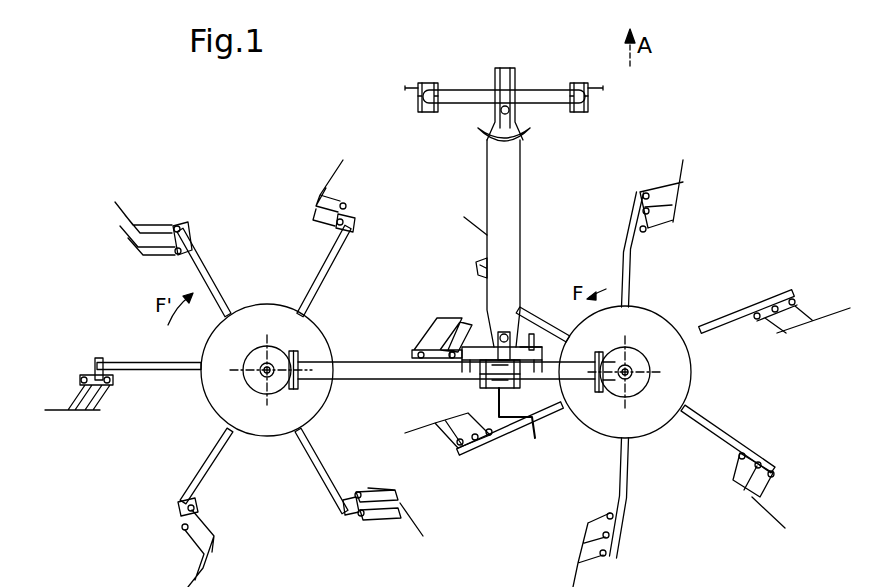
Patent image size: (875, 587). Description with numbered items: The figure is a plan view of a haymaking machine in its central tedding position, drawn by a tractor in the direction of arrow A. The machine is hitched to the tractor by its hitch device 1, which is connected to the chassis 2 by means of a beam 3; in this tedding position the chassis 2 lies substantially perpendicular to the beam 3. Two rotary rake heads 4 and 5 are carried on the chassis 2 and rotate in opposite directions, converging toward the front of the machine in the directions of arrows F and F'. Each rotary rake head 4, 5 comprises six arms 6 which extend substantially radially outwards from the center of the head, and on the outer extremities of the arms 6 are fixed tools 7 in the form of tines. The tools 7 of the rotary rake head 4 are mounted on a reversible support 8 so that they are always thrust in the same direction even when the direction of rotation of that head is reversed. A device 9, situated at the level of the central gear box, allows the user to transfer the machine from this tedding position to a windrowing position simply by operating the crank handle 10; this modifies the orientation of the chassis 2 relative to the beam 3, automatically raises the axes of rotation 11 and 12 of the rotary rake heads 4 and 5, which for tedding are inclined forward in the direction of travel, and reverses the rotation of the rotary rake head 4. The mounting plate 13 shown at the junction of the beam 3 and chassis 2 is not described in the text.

The hitch device 1 is at (523, 93).
The chassis 2 is at (386, 364).
The beam 3 is at (492, 194).
The rotary rake head 4 is at (329, 348).
The rotary rake head 5 is at (694, 386).
The arm 6 is at (211, 266).
The tool 7 is at (150, 225).
The reversible support 8 is at (180, 230).
The device 9 is at (534, 333).
The crank handle 10 is at (534, 437).
The axis of rotation 11 is at (263, 370).
The axis of rotation 12 is at (632, 373).
The mounting plate 13 is at (476, 345).